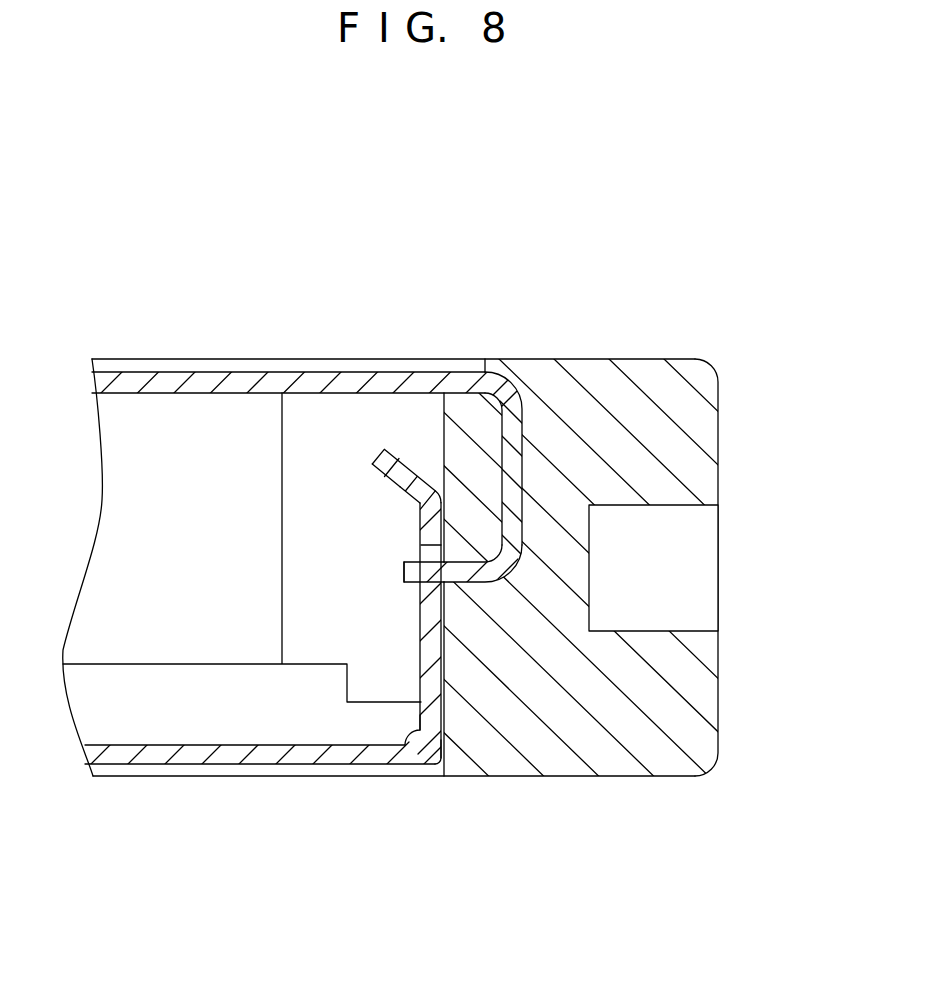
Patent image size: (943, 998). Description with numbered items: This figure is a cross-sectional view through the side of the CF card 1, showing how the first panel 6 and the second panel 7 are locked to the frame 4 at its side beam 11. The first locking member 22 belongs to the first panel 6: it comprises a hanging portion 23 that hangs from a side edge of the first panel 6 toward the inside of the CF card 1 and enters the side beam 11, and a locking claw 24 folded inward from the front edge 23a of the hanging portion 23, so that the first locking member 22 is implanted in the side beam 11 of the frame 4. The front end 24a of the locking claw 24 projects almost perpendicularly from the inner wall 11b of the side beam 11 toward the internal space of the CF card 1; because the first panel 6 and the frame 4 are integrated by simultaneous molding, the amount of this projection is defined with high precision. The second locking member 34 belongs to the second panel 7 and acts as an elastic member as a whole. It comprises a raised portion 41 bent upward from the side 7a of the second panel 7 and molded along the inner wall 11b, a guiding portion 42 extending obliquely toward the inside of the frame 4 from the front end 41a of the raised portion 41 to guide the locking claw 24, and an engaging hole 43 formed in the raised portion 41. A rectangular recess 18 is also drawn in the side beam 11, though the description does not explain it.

The CF card 1 is at (394, 199).
The frame 4 is at (723, 263).
The first panel 6 is at (213, 372).
The second panel 7 is at (208, 766).
The side of the second panel 7a is at (425, 762).
The side beam 11 is at (700, 425).
The inner wall of the side beam 11b is at (443, 430).
The recess 18 is at (692, 631).
The first locking member 22 is at (377, 415).
The hanging portion 23 is at (513, 408).
The front edge of the hanging portion 23a is at (508, 562).
The locking claw 24 is at (452, 572).
The front end of the locking claw 24a is at (403, 573).
The second locking member 34 is at (392, 480).
The raised portion 41 is at (428, 656).
The front end of the raised portion 41a is at (418, 498).
The guiding portion 42 is at (397, 462).
The engaging hole 43 is at (428, 560).